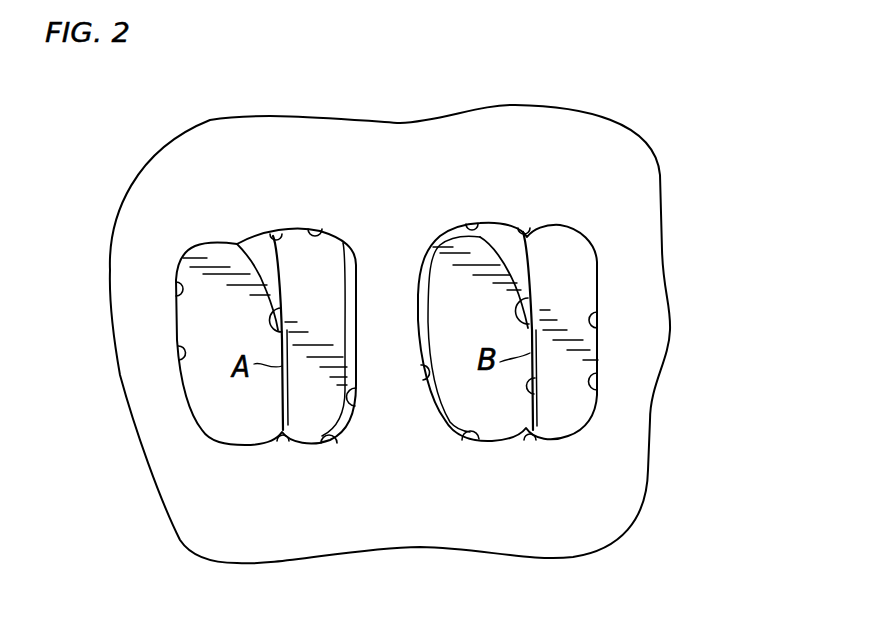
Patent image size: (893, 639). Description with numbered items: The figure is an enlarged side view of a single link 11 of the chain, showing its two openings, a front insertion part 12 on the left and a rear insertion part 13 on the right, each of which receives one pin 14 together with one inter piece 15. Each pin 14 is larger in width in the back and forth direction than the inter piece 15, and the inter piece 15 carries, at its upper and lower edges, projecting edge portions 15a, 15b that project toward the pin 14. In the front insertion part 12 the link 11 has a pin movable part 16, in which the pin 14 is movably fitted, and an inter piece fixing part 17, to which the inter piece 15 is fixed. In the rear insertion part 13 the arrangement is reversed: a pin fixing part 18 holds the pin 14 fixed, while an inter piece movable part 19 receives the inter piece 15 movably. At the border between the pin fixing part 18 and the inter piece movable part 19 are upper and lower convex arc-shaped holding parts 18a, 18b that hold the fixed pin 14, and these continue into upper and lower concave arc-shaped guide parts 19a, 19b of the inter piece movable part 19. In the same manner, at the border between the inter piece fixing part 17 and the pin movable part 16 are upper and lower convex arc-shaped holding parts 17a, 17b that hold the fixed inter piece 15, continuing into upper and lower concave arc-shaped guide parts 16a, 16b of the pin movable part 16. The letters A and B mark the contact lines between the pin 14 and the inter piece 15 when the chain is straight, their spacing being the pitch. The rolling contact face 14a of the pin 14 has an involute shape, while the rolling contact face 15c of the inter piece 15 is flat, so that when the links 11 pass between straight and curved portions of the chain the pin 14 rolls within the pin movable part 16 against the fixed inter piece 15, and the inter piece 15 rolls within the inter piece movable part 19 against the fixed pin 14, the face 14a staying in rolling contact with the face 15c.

The link 11 is at (660, 188).
The front insertion part 12 is at (597, 327).
The rear insertion part 13 is at (185, 363).
The pin 14 is at (216, 418).
The rolling contact face of the pin 14a is at (268, 308).
The inter piece 15 is at (327, 325).
The projecting edge portion 15a is at (274, 232).
The projecting edge portion 15b is at (288, 443).
The rolling contact face of the inter piece 15c is at (282, 383).
The pin movable part 16 is at (430, 374).
The concave arc-shaped guide part 16a is at (478, 224).
The concave arc-shaped guide part 16b is at (468, 432).
The inter piece fixing part 17 is at (598, 374).
The convex arc-shaped holding part 17a is at (522, 217).
The convex arc-shaped holding part 17b is at (522, 443).
The pin fixing part 18 is at (177, 298).
The convex arc-shaped holding part 18a is at (235, 233).
The convex arc-shaped holding part 18b is at (260, 447).
The inter piece movable part 19 is at (360, 400).
The concave arc-shaped guide part 19a is at (316, 236).
The concave arc-shaped guide part 19b is at (324, 432).